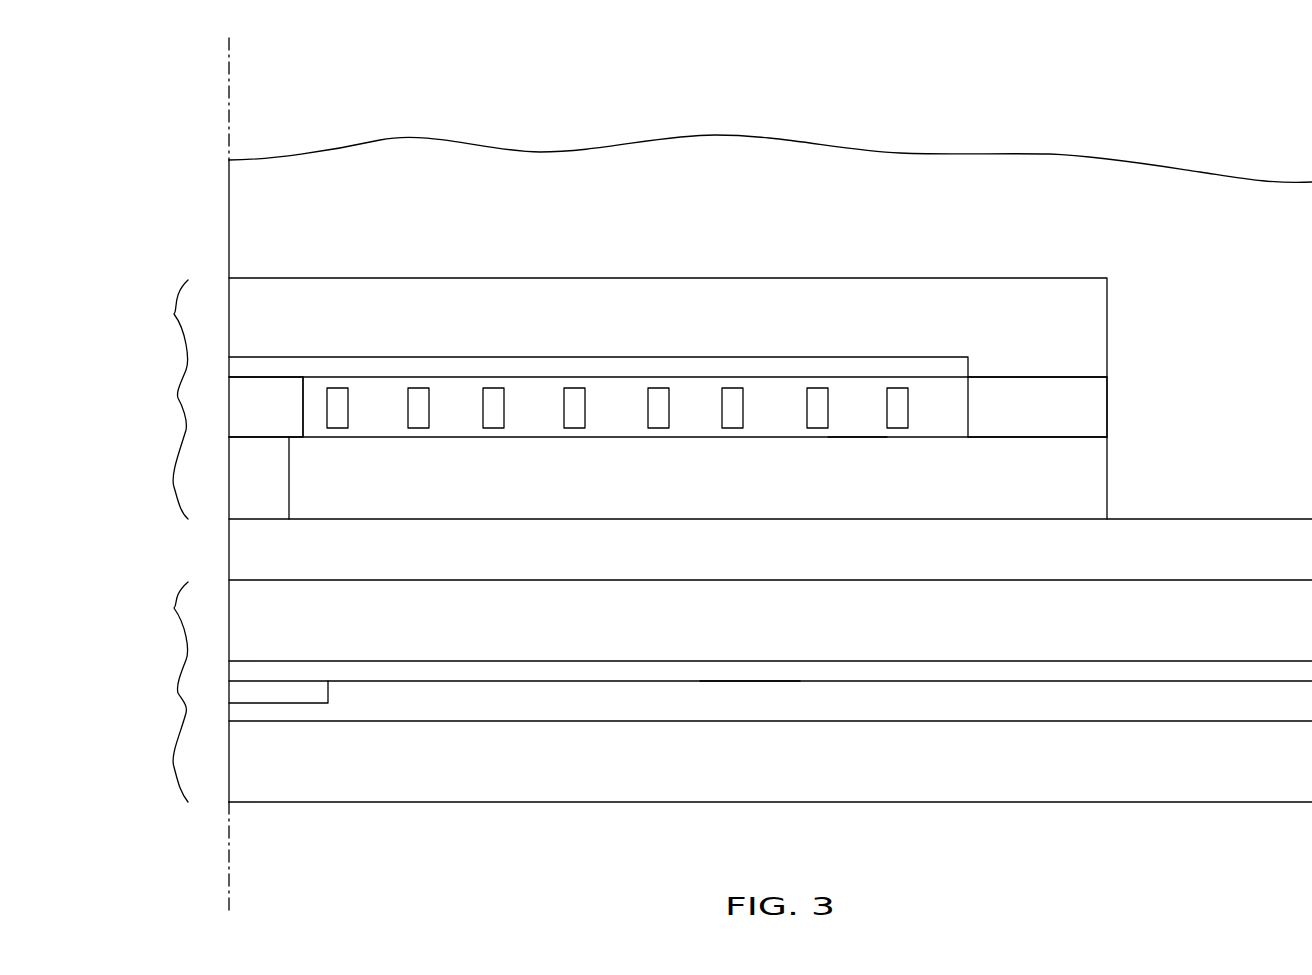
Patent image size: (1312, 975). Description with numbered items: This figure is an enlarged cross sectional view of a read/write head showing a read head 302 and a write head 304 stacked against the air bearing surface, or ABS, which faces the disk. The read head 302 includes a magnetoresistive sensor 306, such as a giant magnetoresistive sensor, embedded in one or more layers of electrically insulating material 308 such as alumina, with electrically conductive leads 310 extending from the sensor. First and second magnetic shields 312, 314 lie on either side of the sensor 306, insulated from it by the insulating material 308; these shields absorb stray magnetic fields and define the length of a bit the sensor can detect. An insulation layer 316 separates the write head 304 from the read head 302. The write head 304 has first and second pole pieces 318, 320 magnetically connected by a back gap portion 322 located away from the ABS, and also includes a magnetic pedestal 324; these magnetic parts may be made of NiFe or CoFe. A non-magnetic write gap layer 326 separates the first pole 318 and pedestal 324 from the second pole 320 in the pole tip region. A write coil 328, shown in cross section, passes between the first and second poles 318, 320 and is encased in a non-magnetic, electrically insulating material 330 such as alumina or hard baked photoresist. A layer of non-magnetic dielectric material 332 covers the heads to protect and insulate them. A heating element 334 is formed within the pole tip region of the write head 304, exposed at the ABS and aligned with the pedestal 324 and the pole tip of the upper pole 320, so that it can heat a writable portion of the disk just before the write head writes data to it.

The air bearing surface ABS is at (229, 83).
The read head 302 is at (175, 608).
The write head 304 is at (172, 313).
The magnetoresistive sensor 306 is at (322, 688).
The electrically insulating material 308 is at (637, 672).
The electrically conductive leads 310 is at (747, 682).
The first magnetic shield 312 is at (454, 760).
The second magnetic shield 314 is at (448, 615).
The insulation layer 316 is at (448, 545).
The first pole piece 318 is at (606, 480).
The second pole piece 320 is at (572, 316).
The back gap portion 322 is at (1064, 405).
The magnetic pedestal 324 is at (298, 408).
The non-magnetic write gap layer 326 is at (425, 368).
The write coil 328 is at (590, 424).
The non-magnetic electrically insulating material 330 is at (863, 423).
The non-magnetic dielectric material 332 is at (561, 214).
The heating element 334 is at (270, 478).